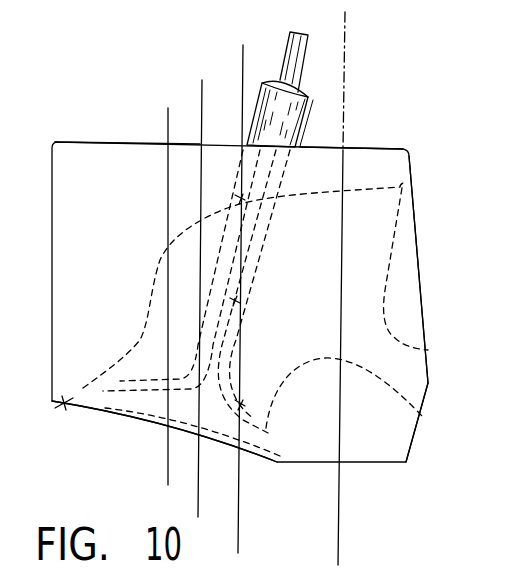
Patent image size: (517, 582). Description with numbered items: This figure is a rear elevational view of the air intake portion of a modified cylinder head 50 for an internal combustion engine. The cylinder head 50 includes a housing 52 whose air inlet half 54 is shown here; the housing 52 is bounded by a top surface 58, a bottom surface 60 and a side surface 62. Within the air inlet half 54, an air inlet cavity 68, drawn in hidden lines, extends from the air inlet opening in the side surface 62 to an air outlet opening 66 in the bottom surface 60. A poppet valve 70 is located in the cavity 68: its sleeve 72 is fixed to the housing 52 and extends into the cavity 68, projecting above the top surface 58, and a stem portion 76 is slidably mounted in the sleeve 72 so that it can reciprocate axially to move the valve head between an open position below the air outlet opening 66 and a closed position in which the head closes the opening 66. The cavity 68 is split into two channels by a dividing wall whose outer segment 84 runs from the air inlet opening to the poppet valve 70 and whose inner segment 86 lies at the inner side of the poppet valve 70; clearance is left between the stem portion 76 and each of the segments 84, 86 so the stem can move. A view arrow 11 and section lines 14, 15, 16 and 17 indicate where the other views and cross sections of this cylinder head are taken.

The modified cylinder head 50 is at (115, 52).
The housing 52 is at (83, 157).
The air inlet half 54 is at (411, 125).
The top surface 58 is at (363, 148).
The bottom surface 60 is at (115, 417).
The side surface 62 is at (429, 382).
The air outlet opening 66 is at (103, 392).
The air inlet cavity 68 is at (416, 413).
The poppet valve 70 is at (219, 216).
The sleeve 72 is at (323, 108).
The stem portion 76 is at (290, 47).
The outer segment 84 is at (385, 321).
The inner segment 86 is at (65, 405).
The view direction arrow 11 is at (462, 233).
The section line 14- 14 is at (153, 113).
The section line 15- 15 is at (190, 85).
The section line 16- 16 is at (230, 50).
The section line 17- 17 is at (332, 17).